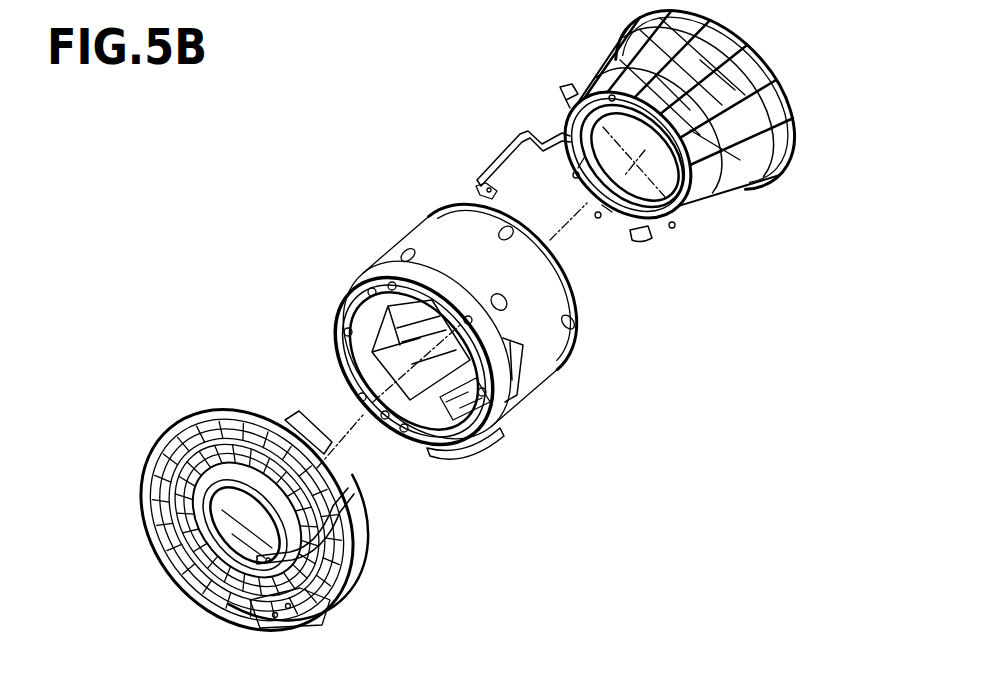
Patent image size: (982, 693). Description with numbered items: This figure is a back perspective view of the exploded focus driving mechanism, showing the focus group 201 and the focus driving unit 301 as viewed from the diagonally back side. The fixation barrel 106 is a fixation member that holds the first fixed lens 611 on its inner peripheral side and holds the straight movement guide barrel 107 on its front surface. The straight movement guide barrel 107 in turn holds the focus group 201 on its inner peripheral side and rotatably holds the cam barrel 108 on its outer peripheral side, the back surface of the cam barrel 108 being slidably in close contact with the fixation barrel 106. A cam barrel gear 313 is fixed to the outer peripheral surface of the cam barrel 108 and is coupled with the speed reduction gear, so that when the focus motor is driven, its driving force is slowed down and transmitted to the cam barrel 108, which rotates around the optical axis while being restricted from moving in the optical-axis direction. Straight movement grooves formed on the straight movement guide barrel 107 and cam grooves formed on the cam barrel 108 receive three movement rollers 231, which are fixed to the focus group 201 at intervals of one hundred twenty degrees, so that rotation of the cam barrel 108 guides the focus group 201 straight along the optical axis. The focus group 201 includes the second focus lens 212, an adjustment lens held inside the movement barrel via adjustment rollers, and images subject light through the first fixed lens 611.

The first fixed lens 611 is at (193, 593).
The fixation barrel 106 is at (353, 560).
The straight movement guide barrel 107 is at (367, 330).
The cam barrel 108 is at (447, 250).
The cam barrel gear 313 is at (483, 445).
The focus driving unit 301 is at (577, 490).
The focus group 201 is at (736, 210).
The movement rollers 231 is at (565, 93).
The second focus lens 212 is at (653, 232).